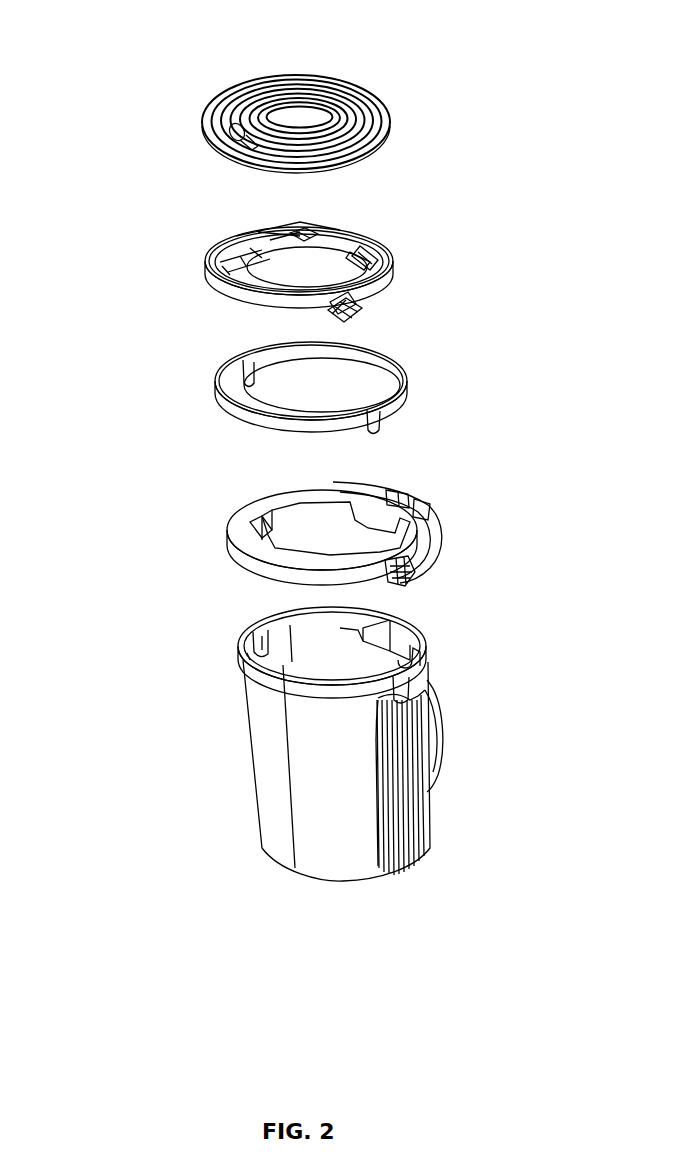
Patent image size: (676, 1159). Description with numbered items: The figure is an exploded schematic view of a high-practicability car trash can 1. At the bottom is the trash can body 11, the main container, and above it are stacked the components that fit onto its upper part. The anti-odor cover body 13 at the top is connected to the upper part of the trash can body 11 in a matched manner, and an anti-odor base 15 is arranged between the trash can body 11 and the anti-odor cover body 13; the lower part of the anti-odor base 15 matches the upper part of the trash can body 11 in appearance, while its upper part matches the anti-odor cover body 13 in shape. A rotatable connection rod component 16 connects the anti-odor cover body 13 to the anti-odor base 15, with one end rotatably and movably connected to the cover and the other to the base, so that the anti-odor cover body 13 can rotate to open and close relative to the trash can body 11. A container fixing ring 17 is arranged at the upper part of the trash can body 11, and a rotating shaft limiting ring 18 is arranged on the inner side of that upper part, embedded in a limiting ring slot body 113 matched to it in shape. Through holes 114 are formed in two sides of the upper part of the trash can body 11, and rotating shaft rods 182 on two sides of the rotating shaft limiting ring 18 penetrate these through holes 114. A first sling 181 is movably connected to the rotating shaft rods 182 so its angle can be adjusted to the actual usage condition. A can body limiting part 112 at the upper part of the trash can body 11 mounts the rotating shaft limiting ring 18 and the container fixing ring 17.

The high-practicability car trash can 1 is at (277, 40).
The trash can body 11 is at (260, 753).
The can body limiting part 112 is at (400, 643).
The limiting ring slot body 113 is at (404, 650).
The through holes 114 is at (255, 638).
The anti-odor cover body 13 is at (208, 124).
The anti-odor base 15 is at (230, 292).
The rotatable connection rod component 16 is at (352, 251).
The container fixing ring 17 is at (240, 407).
The rotating shaft limiting ring 18 is at (232, 550).
The first sling 181 is at (435, 518).
The rotating shaft rods 182 is at (415, 583).